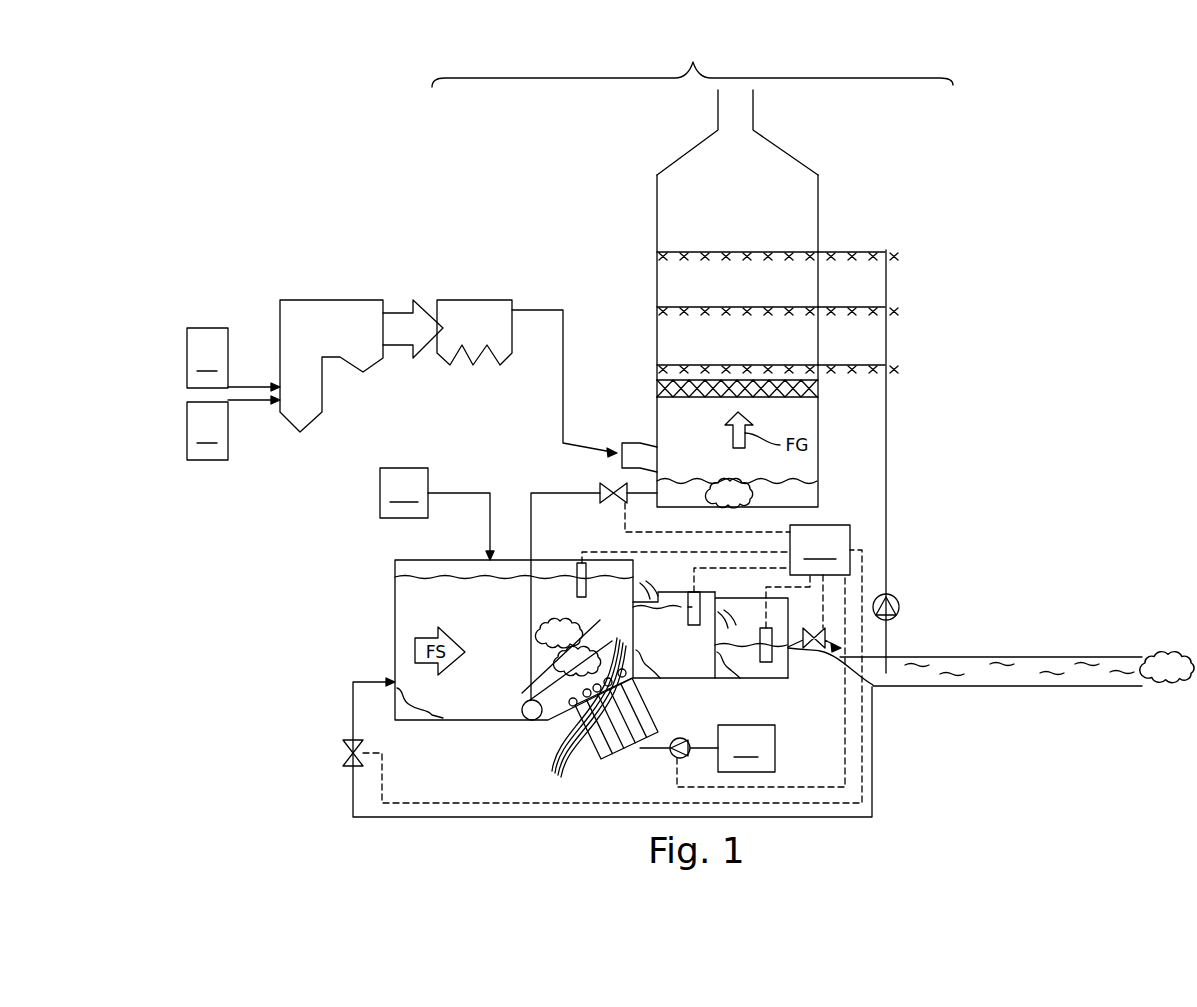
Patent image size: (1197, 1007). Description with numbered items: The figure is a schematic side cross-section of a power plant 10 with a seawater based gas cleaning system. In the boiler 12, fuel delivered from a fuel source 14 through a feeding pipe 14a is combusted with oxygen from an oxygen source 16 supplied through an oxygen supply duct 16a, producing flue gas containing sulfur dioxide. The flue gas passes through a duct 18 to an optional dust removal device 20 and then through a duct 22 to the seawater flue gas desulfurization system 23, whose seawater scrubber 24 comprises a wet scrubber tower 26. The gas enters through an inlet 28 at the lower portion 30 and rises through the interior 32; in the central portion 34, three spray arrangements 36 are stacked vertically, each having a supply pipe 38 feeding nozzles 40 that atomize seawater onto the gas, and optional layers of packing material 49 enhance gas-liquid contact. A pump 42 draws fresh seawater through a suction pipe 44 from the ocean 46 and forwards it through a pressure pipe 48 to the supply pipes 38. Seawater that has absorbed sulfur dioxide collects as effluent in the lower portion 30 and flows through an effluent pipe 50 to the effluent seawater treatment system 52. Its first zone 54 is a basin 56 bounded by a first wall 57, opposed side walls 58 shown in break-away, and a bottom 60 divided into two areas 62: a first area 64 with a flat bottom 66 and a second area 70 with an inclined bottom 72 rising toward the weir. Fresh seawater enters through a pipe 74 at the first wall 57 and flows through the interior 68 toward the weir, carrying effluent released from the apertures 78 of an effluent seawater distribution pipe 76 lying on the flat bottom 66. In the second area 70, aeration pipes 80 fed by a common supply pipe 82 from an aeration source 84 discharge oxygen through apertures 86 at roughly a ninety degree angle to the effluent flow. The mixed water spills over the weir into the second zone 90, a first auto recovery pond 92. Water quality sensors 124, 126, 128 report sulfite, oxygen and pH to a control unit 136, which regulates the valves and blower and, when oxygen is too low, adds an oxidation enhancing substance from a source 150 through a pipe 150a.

The power plant 10 is at (973, 82).
The boiler 12 is at (318, 300).
The fuel source 14 is at (207, 358).
The feeding pipe 14a is at (248, 385).
The oxygen source 16 is at (207, 431).
The oxygen supply duct 16a is at (250, 402).
The duct 18 is at (420, 300).
The dust removal device 20 is at (472, 300).
The duct 22 is at (530, 310).
The seawater flue gas desulfurization system 23 is at (692, 65).
The seawater scrubber 24 is at (787, 148).
The wet scrubber tower 26 is at (818, 417).
The inlet 28 is at (640, 442).
The lower portion 30 is at (818, 465).
The interior 32 is at (670, 338).
The central portion 34 is at (657, 282).
The spray arrangement 36 is at (784, 244).
The supply pipe 38 is at (858, 250).
The nozzle 40 is at (657, 252).
The pump 42 is at (899, 605).
The suction pipe 44 is at (888, 638).
The ocean 46 is at (1085, 655).
The pressure pipe 48 is at (886, 453).
The packing material 49 is at (657, 385).
The effluent pipe 50 is at (531, 493).
The effluent seawater treatment system 52 is at (881, 798).
The first zone 54 is at (507, 560).
The basin 56 is at (403, 593).
The first wall 57 is at (400, 650).
The opposed side walls 58 is at (447, 560).
The bottom 60 is at (473, 722).
The areas 62 is at (622, 597).
The first area 64 is at (523, 720).
The flat bottom 66 is at (497, 720).
The interior 68 is at (403, 617).
The second area 70 is at (530, 690).
The inclined bottom 72 is at (622, 714).
The pipe 74 is at (862, 740).
The effluent seawater distribution pipe 76 is at (548, 720).
The apertures 78 is at (522, 703).
The aeration pipes 80 is at (589, 715).
The supply pipe 82 is at (690, 740).
The aeration source 84 is at (746, 748).
The apertures 86 is at (528, 695).
The second zone 90 is at (665, 584).
The first auto recovery pond 92 is at (705, 665).
The water quality sensor 124 is at (580, 563).
The water quality sensor 126 is at (700, 592).
The water quality sensor 128 is at (772, 662).
The control unit 136 is at (737, 565).
The oxidation enhancing substance source 150 is at (404, 493).
The pipe 150a is at (465, 493).